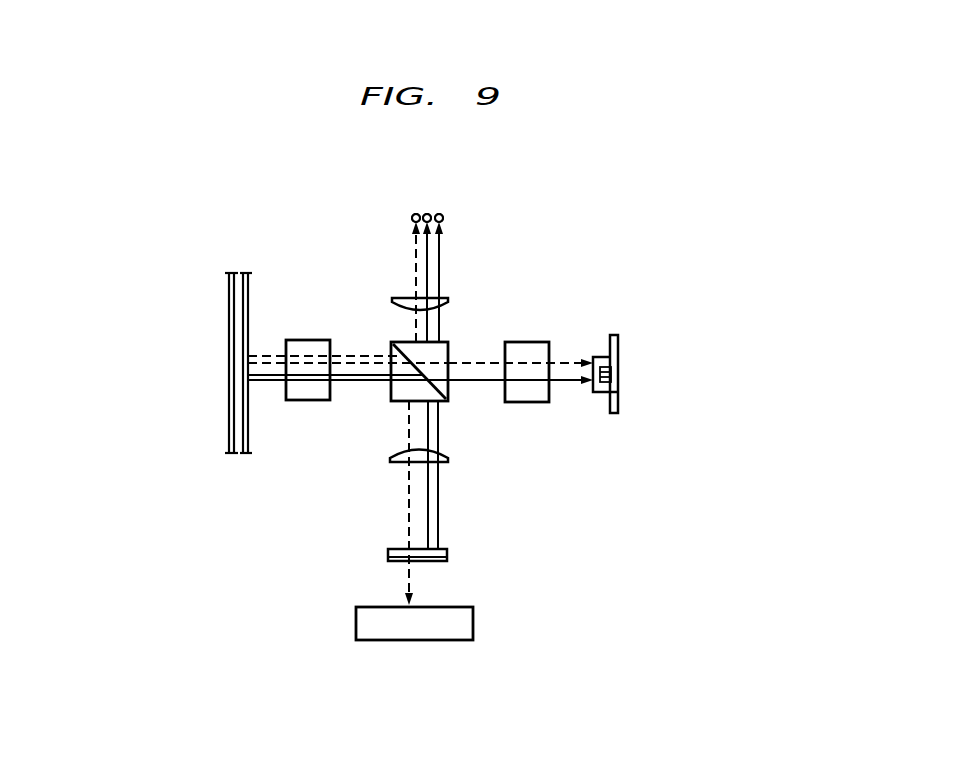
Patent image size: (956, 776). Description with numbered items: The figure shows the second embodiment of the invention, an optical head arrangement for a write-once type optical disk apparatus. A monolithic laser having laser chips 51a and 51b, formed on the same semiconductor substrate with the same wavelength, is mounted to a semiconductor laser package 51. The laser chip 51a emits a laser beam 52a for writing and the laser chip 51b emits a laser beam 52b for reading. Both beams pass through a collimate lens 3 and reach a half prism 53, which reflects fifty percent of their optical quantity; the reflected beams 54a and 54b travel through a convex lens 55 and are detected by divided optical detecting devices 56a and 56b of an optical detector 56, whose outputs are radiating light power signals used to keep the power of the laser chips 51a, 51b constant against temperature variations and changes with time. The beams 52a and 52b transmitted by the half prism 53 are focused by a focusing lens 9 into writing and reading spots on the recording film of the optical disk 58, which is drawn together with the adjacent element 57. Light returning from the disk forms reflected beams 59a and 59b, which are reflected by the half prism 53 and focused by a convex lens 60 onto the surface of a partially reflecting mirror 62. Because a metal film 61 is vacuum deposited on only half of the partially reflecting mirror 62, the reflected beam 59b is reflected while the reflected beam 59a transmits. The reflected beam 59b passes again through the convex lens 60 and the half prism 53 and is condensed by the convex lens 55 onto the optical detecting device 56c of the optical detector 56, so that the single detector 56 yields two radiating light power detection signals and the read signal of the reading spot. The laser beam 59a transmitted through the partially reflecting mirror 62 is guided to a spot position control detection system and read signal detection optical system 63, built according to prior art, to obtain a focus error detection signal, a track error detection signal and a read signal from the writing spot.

The collimate lens 3 is at (534, 342).
The focusing lens 9 is at (325, 340).
The semiconductor laser package 51 is at (617, 335).
The laser chip 51a is at (618, 365).
The laser chip 51b is at (618, 382).
The laser beam 52a is at (568, 362).
The laser beam 52b is at (568, 384).
The half prism 53 is at (399, 400).
The reflected beam 54a is at (414, 257).
The reflected beam 54b is at (428, 258).
The convex lens 55 is at (445, 299).
The optical detector 56 is at (455, 216).
The divided optical detecting device 56a is at (413, 215).
The divided optical detecting device 56b is at (427, 213).
The optical detecting device 56c is at (441, 214).
The mirror 57 is at (228, 372).
The optical disk 58 is at (248, 447).
The reflected beam 59a is at (262, 356).
The reflected beam 59b is at (267, 383).
The convex lens 60 is at (449, 458).
The metal film 61 is at (447, 550).
The partially reflecting mirror 62 is at (447, 560).
The spot position control detection system and read signal detection optical system 63 is at (473, 620).